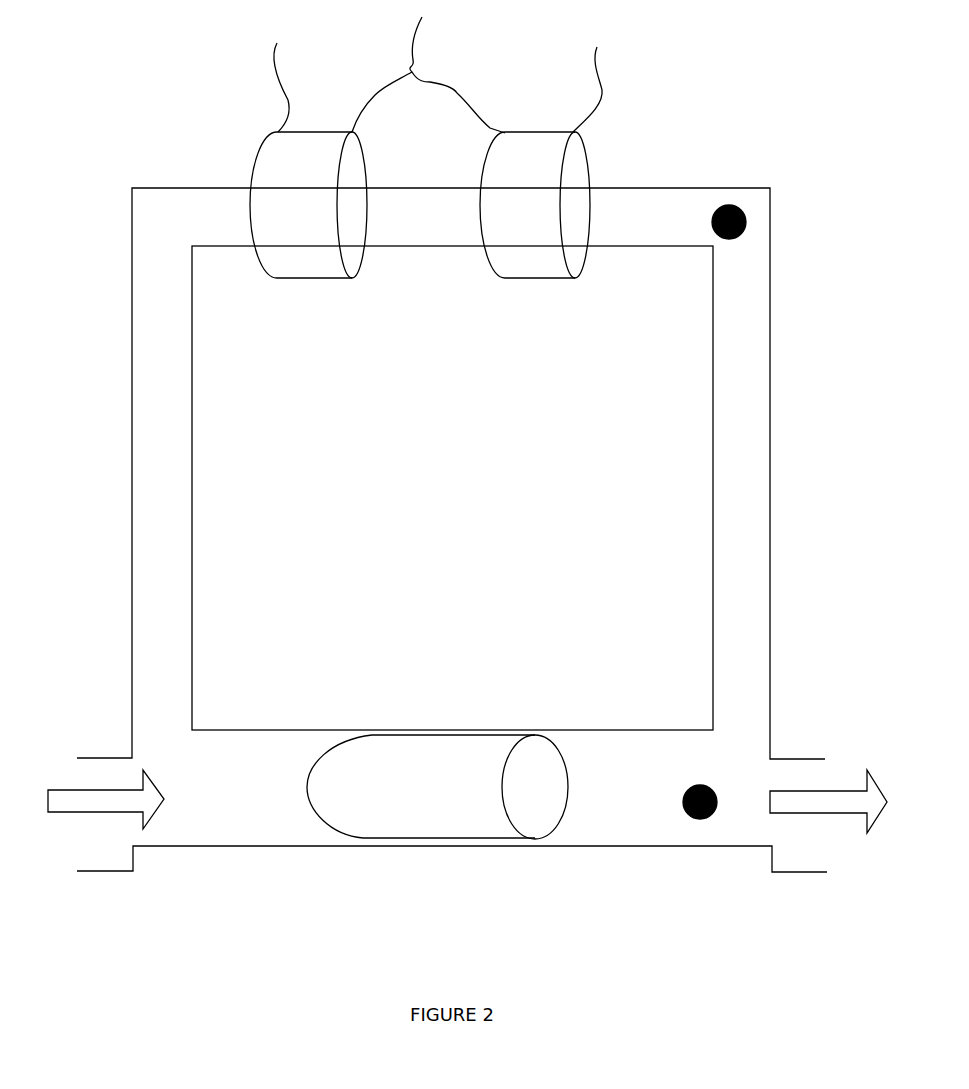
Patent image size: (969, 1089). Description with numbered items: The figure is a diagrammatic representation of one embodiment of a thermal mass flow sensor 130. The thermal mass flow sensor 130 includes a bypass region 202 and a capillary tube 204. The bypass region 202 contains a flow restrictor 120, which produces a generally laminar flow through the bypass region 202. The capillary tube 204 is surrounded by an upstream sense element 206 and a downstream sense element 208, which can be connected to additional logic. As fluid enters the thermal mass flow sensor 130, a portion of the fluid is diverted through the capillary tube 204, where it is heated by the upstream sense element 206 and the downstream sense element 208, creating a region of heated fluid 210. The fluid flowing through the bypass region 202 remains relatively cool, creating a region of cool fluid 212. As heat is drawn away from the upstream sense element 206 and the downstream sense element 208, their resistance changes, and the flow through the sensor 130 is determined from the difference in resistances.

The thermal mass flow sensor 130 is at (192, 103).
The capillary tube 204 is at (147, 318).
The bypass region 202 is at (263, 799).
The upstream sense element 206 is at (267, 143).
The downstream sense element 208 is at (587, 157).
The region of heated fluid 210 is at (738, 205).
The region of cool fluid 212 is at (713, 780).
The flow restrictor 120 is at (438, 817).